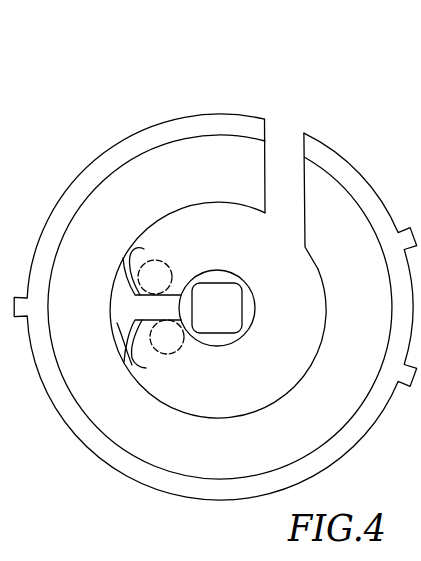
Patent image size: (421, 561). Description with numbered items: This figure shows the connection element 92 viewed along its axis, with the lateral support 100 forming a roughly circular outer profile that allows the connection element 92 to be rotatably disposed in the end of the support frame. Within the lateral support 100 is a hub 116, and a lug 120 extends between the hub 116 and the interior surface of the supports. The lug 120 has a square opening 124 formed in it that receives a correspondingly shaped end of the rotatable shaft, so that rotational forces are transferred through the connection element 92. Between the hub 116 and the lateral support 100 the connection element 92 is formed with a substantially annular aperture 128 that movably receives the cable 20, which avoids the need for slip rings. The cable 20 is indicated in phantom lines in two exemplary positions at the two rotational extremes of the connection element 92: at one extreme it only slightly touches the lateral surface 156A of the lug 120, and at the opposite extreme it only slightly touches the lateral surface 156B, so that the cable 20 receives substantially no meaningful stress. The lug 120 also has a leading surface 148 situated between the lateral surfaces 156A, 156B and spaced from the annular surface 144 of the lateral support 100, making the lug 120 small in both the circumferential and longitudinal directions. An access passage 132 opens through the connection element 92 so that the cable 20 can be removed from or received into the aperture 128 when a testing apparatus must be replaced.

The connection element 92 is at (192, 108).
The lateral support 100 is at (107, 152).
The access passage 132 is at (277, 166).
The annular surface 144 is at (134, 439).
The aperture 128 is at (257, 372).
The hub 116 is at (217, 270).
The square opening 124 is at (238, 297).
The leading surface 148 is at (131, 307).
The lug 120 is at (131, 321).
The lateral surface 156A is at (119, 262).
The lateral surface 156B is at (134, 330).
The cable 20 is at (162, 262).